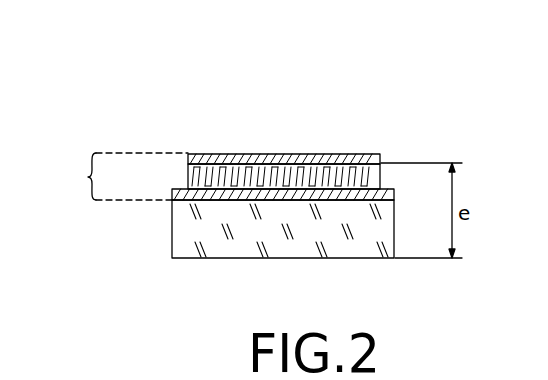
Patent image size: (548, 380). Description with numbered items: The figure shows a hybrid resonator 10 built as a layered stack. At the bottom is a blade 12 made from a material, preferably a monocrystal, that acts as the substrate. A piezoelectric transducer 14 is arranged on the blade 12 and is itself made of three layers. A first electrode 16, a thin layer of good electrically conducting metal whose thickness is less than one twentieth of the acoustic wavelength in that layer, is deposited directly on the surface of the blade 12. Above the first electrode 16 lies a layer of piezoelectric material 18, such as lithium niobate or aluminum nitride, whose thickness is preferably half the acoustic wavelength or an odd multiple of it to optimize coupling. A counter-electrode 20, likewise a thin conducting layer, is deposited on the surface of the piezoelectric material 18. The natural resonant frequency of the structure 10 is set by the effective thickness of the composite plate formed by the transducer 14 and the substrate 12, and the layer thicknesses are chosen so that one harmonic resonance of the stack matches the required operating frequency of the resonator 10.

The hybrid resonator 10 is at (388, 133).
The blade 12 is at (190, 244).
The piezoelectric transducer 14 is at (121, 176).
The first electrode 16 is at (172, 193).
The layer of piezoelectric material 18 is at (342, 173).
The counter-electrode 20 is at (223, 165).